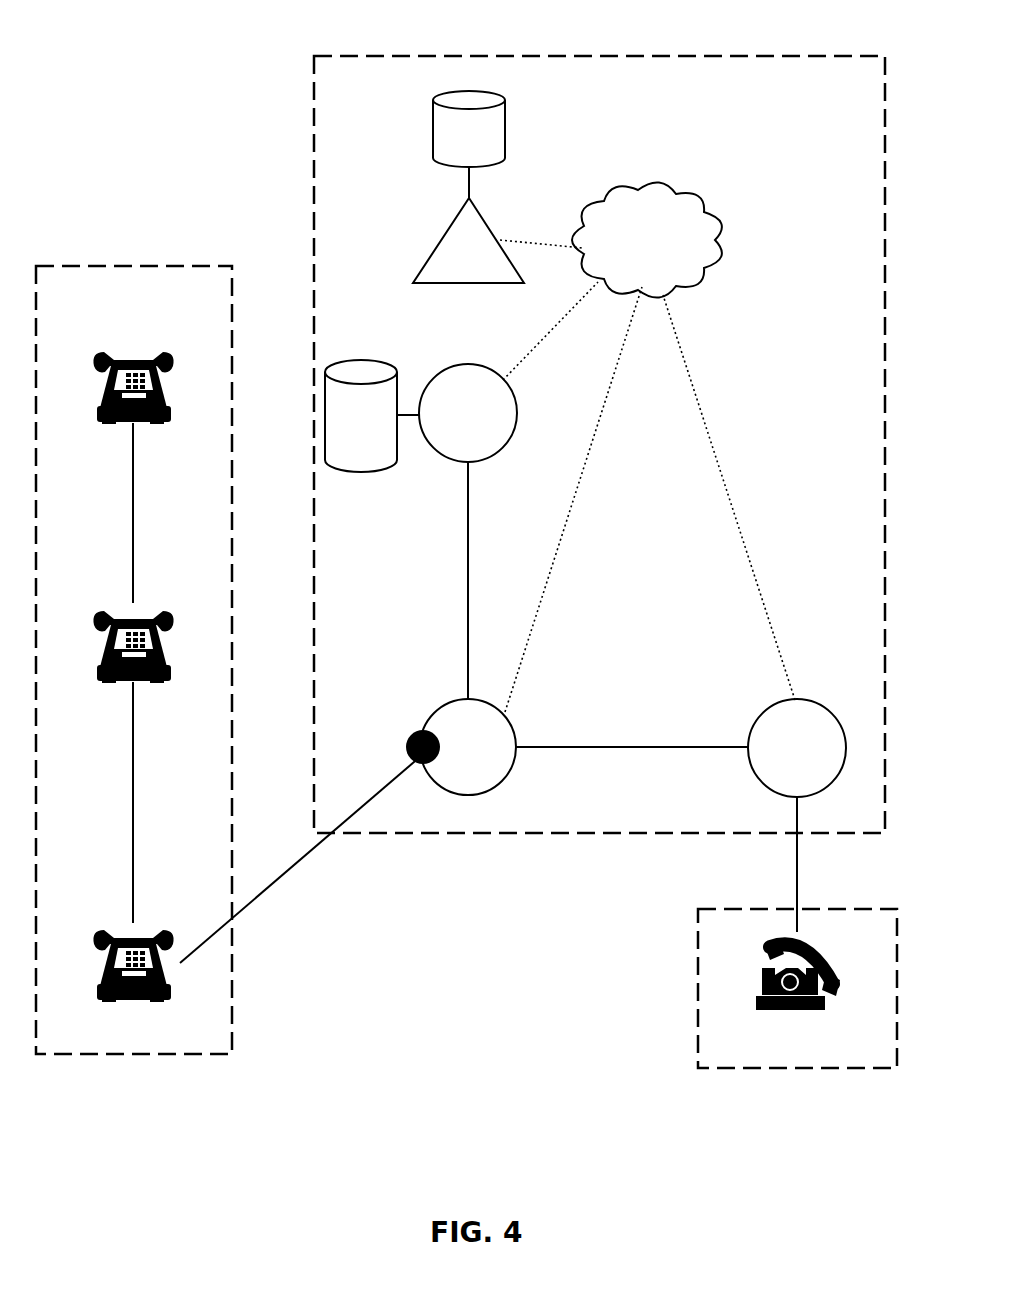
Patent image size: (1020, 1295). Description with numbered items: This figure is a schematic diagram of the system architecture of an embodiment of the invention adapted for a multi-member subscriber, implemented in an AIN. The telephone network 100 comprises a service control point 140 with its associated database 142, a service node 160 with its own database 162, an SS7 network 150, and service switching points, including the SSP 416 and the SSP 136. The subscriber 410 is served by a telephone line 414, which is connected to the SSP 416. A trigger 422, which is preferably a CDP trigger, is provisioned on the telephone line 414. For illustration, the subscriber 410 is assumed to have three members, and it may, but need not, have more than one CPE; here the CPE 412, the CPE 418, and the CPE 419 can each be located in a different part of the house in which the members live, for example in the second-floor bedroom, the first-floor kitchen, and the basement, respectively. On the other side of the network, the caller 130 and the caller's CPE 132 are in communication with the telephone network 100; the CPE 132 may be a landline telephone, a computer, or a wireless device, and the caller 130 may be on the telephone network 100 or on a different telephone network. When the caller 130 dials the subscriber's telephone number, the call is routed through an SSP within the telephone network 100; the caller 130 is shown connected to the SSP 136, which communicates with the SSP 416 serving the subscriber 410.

The telephone network 100 is at (643, 55).
The caller 130 is at (698, 988).
The CPE 132 is at (756, 971).
The service switching point 136 is at (761, 713).
The service control point 140 is at (437, 241).
The database 142 is at (432, 126).
The SS7 network 150 is at (682, 289).
The service node 160 is at (503, 447).
The database 162 is at (372, 416).
The subscriber 410 is at (133, 1055).
The CPE 412 is at (86, 959).
The telephone line 414 is at (273, 875).
The SSP 416 is at (505, 783).
The CPE 418 is at (84, 639).
The CPE 419 is at (84, 379).
The trigger 422 is at (414, 732).